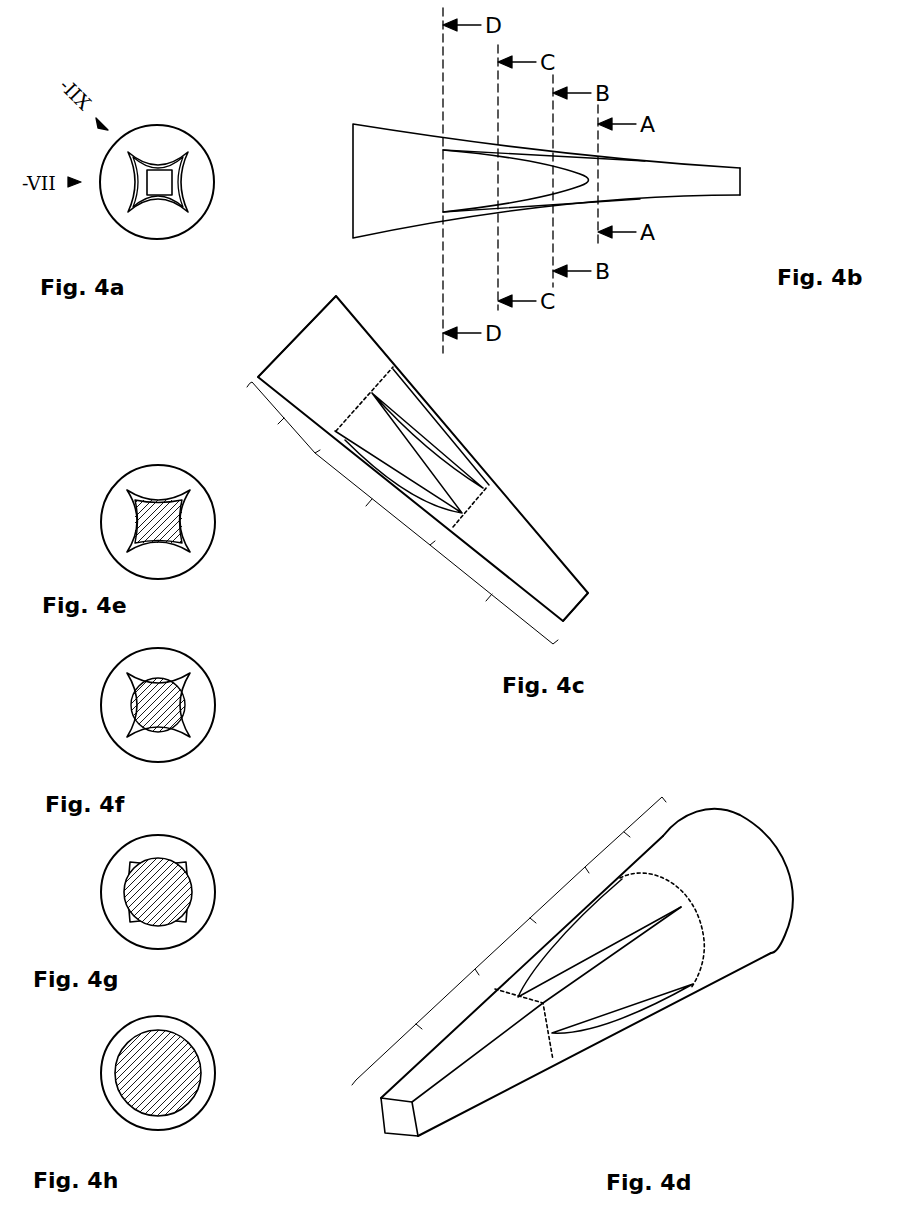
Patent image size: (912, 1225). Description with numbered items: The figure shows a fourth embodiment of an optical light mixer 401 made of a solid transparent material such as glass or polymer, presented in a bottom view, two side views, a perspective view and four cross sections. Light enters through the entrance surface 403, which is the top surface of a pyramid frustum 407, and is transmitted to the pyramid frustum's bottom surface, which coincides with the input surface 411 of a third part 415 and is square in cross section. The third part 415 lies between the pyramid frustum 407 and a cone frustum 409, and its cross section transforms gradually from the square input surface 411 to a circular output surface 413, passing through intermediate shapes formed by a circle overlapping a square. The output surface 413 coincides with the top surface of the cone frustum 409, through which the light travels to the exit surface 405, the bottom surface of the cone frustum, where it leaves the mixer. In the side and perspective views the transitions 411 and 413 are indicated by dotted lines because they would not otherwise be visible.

In FIG. 4D, the optical light mixer 401 is at (500, 810).
In FIG. 4A, the entrance surface 403 is at (160, 183).
In FIG. 4B, the entrance surface 403 is at (743, 177).
In FIG. 4C, the entrance surface 403 is at (580, 604).
In FIG. 4D, the entrance surface 403 is at (395, 1126).
In FIG. 4B, the exit surface 405 is at (352, 164).
In FIG. 4C, the exit surface 405 is at (280, 350).
In FIG. 4D, the exit surface 405 is at (778, 847).
In FIG. 4C, the pyramid frustum 407 is at (494, 599).
In FIG. 4D, the pyramid frustum 407 is at (415, 1027).
In FIG. 4C, the cone frustum 409 is at (276, 423).
In FIG. 4D, the cone frustum 409 is at (622, 824).
In FIG. 4C, the input surface 411 is at (492, 484).
In FIG. 4D, the input surface 411 is at (545, 1054).
In FIG. 4E, the input surface 411 is at (160, 500).
In FIG. 4D, the output surface 413 is at (703, 960).
In FIG. 4H, the output surface 413 is at (187, 1038).
In FIG. 4C, the third part 415 is at (375, 504).
In FIG. 4D, the third part 415 is at (532, 918).